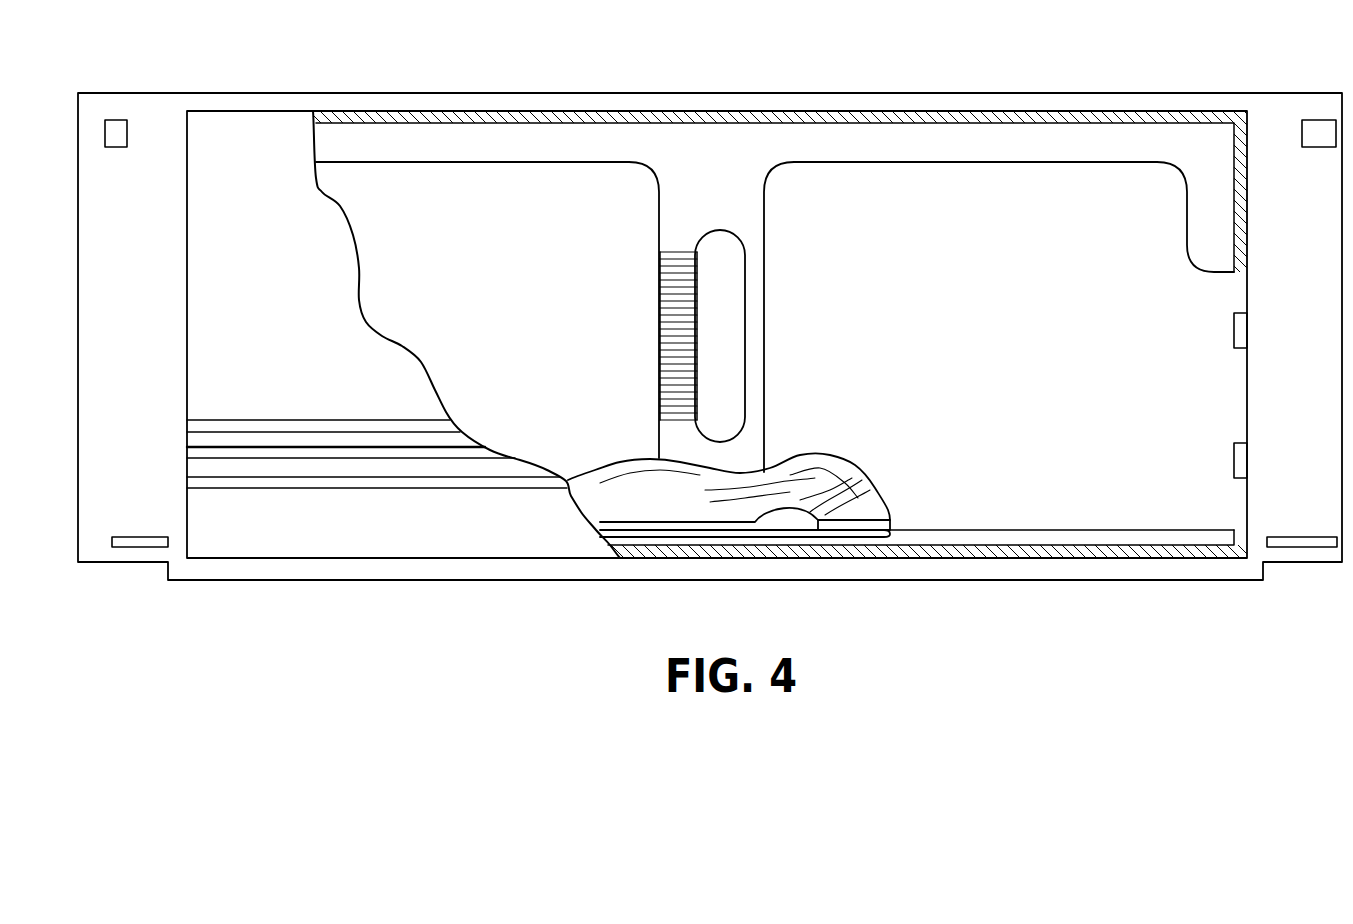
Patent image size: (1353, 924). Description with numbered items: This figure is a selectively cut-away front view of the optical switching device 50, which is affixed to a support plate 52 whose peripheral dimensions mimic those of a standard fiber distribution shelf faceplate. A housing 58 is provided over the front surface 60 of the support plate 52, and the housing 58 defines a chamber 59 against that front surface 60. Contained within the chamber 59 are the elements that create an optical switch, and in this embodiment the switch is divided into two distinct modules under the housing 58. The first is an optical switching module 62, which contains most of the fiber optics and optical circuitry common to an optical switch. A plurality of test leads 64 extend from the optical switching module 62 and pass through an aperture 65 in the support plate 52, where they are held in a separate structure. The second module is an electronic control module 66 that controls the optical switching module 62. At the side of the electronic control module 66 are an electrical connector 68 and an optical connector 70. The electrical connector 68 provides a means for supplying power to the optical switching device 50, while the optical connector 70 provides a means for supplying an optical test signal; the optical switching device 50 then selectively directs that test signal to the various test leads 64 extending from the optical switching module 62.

The optical switching device 50 is at (637, 88).
The support plate 52 is at (915, 93).
The housing 58 is at (250, 128).
The chamber 59 is at (445, 140).
The front surface 60 is at (157, 115).
The optical switching module 62 is at (524, 318).
The test leads 64 is at (677, 262).
The aperture 65 is at (723, 240).
The electronic control module 66 is at (979, 318).
The electrical connector 68 is at (1249, 459).
The optical connector 70 is at (1249, 329).